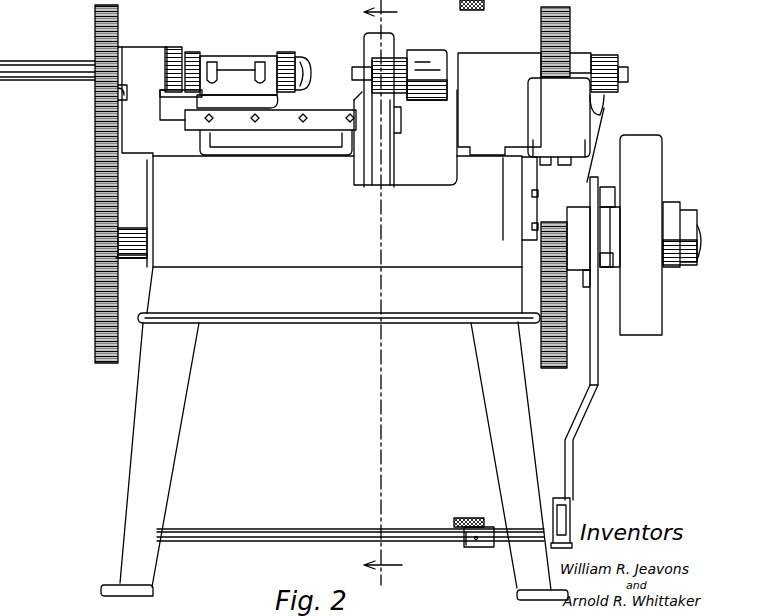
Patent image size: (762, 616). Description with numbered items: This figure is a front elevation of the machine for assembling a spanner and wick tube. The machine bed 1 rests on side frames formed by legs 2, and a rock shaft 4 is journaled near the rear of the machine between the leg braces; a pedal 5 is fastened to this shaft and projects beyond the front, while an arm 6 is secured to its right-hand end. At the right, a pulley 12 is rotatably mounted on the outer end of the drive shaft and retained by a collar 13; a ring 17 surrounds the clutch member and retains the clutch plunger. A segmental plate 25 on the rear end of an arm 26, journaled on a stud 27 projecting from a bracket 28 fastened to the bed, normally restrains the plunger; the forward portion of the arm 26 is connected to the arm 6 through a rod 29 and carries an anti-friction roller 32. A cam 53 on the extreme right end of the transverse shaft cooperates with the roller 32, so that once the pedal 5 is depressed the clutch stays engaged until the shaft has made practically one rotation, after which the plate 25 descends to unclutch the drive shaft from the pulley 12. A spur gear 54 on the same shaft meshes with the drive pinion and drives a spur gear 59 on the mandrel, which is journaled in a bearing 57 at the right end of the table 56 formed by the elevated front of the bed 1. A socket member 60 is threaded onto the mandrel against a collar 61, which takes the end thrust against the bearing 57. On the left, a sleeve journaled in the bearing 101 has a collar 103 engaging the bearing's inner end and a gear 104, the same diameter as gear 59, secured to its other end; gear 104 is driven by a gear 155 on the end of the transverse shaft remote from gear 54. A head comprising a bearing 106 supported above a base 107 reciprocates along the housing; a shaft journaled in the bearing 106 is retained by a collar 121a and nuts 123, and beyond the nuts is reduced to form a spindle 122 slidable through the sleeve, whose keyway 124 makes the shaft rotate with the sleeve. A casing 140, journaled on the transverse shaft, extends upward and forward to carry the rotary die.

The machine bed 1 is at (367, 309).
The legs 2 is at (172, 418).
The rock shaft 4 is at (314, 535).
The pedal 5 is at (462, 506).
The arm 6 is at (565, 522).
The pulley 12 is at (648, 150).
The collar 13 is at (685, 268).
The ring 17 is at (608, 268).
The segmental plate 25 is at (602, 237).
The arm 26 is at (598, 197).
The stud 27 is at (615, 208).
The bracket 28 is at (606, 116).
The rod 29 is at (598, 375).
The anti-friction roller 32 is at (628, 77).
The cam 53 is at (577, 210).
The spur gear 54 is at (571, 342).
The table 56 is at (356, 182).
The bearing 57 is at (487, 60).
The spur gear 59 is at (568, 26).
The socket member 60 is at (421, 50).
The collar 61 is at (499, 104).
The bearing 101 is at (147, 52).
The collar 103 is at (174, 53).
The gear 104 is at (95, 24).
The bearing 106 is at (240, 58).
The base 107 is at (239, 102).
The collar 121a is at (277, 56).
The spindle 122 is at (26, 69).
The nuts 123 is at (194, 62).
The keyway 124 is at (28, 55).
The casing 140 is at (387, 148).
The gear 155 is at (97, 207).